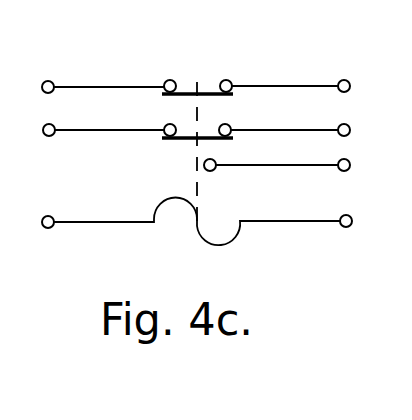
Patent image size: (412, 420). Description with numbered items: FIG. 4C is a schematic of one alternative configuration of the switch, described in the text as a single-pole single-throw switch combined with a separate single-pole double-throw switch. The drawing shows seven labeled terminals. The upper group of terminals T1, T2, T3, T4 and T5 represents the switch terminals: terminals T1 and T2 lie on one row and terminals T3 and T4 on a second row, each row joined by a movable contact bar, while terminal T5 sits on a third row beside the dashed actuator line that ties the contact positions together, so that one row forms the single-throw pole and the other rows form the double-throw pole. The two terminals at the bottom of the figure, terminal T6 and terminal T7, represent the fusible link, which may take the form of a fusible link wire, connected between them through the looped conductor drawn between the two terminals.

The terminal T1 is at (93, 73).
The terminal T2 is at (302, 72).
The terminal T3 is at (95, 146).
The terminal T4 is at (309, 131).
The terminal T5 is at (294, 166).
The terminal T6 is at (111, 229).
The terminal T7 is at (285, 236).